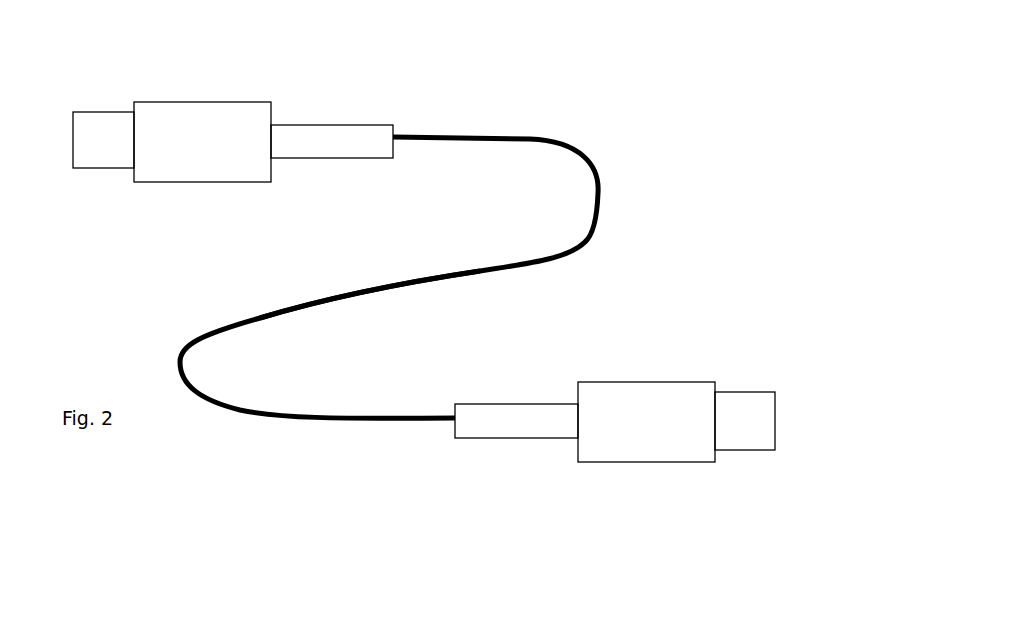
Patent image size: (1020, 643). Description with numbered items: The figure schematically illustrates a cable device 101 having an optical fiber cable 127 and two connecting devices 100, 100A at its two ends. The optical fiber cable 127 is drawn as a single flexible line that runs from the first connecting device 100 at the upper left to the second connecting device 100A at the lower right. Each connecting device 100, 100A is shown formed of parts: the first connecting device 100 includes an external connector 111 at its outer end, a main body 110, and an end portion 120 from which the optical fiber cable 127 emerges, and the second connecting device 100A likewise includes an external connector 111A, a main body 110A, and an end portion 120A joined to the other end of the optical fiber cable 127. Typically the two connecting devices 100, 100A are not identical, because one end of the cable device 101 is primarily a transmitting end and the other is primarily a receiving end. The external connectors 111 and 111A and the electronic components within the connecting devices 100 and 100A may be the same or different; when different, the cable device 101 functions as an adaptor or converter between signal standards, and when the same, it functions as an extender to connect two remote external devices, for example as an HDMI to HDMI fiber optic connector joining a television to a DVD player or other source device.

The cable device 101 is at (605, 114).
The optical fiber cable 127 is at (443, 273).
The connecting device 100 is at (73, 182).
The external connector 111 is at (107, 123).
The first connector housing 110 is at (198, 122).
The first strain relief 120 is at (335, 135).
The connecting device 100A is at (463, 473).
The external connector 111A is at (748, 408).
The second connector housing 110A is at (656, 393).
The second strain relief 120A is at (547, 417).